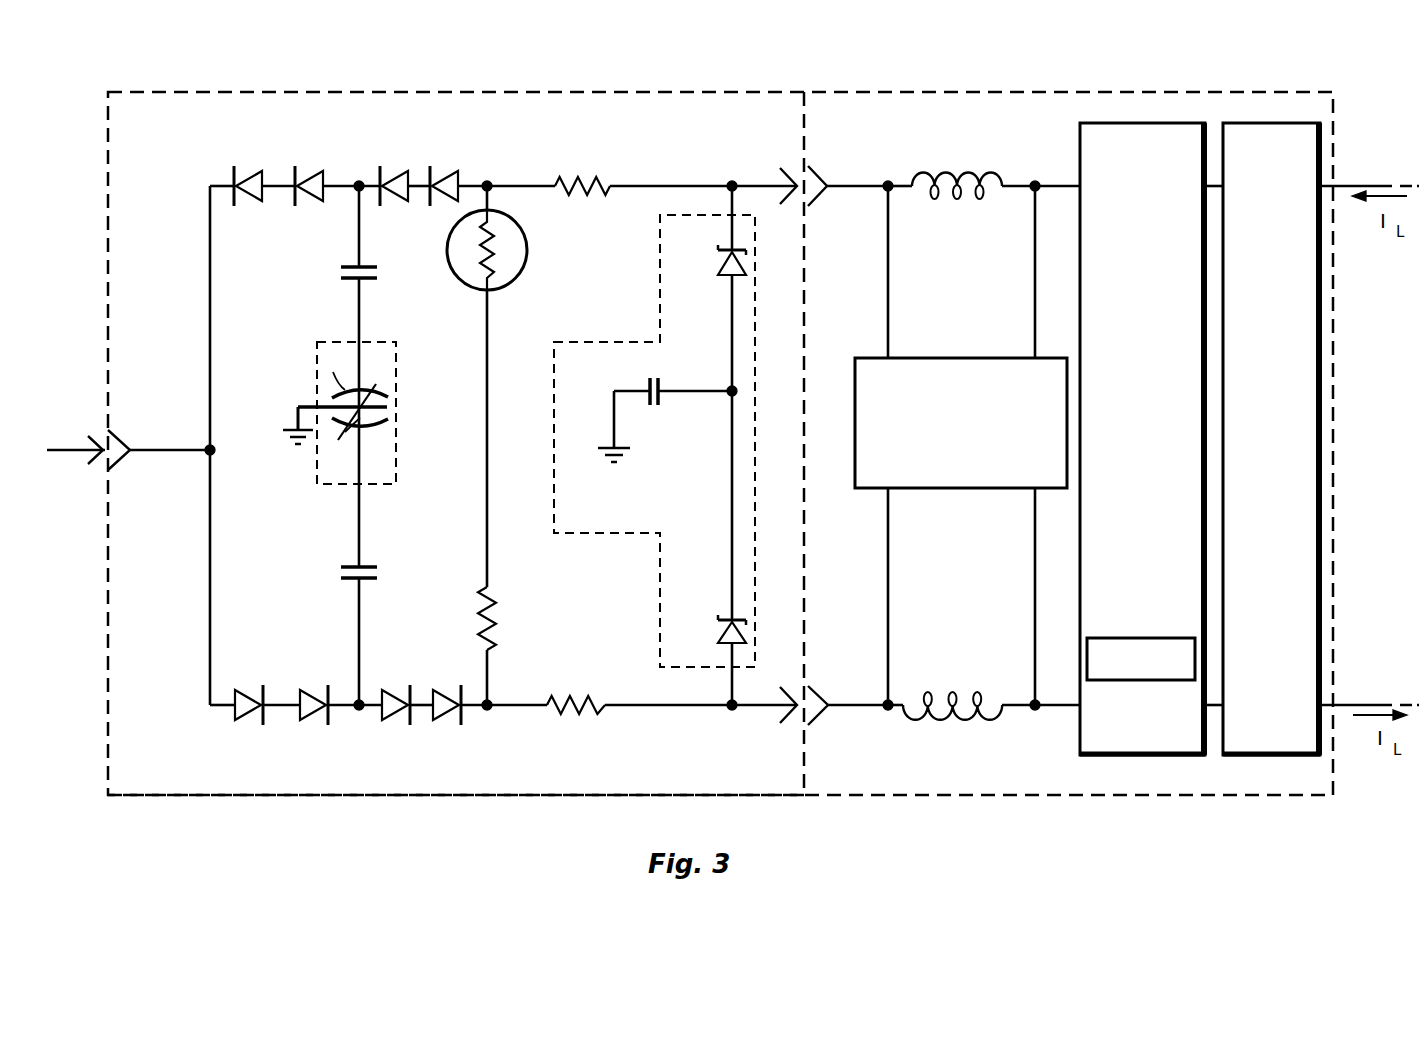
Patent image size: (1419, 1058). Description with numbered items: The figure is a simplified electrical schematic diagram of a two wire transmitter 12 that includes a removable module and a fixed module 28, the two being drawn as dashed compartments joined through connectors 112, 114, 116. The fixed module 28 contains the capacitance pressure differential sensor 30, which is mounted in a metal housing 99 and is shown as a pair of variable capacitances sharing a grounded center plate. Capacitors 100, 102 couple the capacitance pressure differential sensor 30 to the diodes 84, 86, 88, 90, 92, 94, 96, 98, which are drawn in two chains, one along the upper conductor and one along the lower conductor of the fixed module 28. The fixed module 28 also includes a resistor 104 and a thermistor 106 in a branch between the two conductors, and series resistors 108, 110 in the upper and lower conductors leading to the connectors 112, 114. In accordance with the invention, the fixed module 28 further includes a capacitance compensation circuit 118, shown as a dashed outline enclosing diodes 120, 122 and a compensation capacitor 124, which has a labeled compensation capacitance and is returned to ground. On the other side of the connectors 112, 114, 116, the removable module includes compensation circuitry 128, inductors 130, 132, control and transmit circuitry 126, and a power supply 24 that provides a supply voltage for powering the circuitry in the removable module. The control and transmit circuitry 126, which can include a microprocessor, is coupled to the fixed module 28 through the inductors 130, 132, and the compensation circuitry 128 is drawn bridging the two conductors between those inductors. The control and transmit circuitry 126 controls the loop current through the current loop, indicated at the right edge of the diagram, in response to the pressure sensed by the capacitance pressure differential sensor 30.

The two wire transmitter 12 is at (104, 119).
The power supply 24 is at (1284, 587).
The fixed module 28 is at (390, 800).
The capacitance pressure differential sensor 30 is at (388, 424).
The diode 84 is at (248, 182).
The diode 86 is at (310, 182).
The diode 88 is at (395, 182).
The diode 90 is at (445, 182).
The diode 92 is at (240, 700).
The diode 94 is at (306, 700).
The diode 96 is at (388, 700).
The diode 98 is at (440, 700).
The metal housing 99 is at (333, 342).
The capacitor 100 is at (352, 266).
The capacitor 102 is at (352, 566).
The resistor 104 is at (498, 605).
The thermistor 106 is at (527, 246).
The series resistor 108 is at (590, 184).
The series resistor 110 is at (568, 716).
The connector 112 is at (818, 172).
The connector 114 is at (818, 716).
The connector 116 is at (110, 440).
The capacitance compensation circuit 118 is at (630, 318).
The diode 120 is at (726, 282).
The diode 122 is at (724, 615).
The compensation capacitor 124 is at (646, 383).
The control and transmit circuitry 126 is at (1162, 574).
The compensation circuitry 128 is at (958, 357).
The inductor 130 is at (944, 170).
The inductor 132 is at (945, 722).